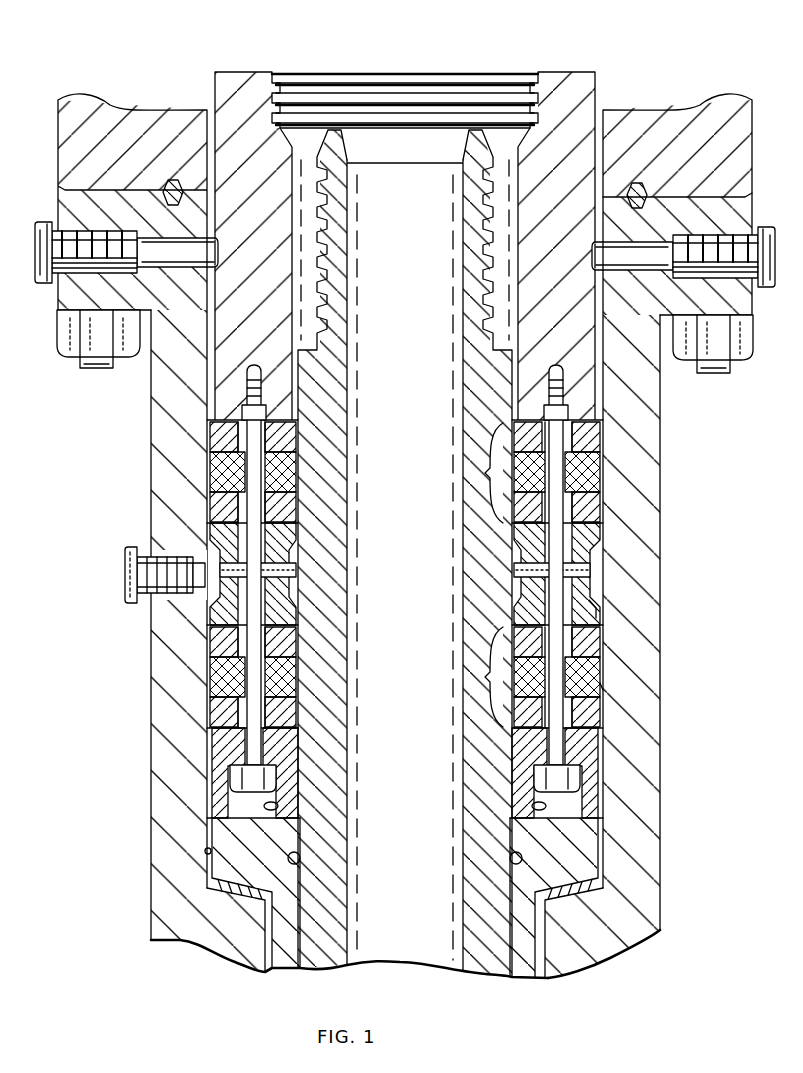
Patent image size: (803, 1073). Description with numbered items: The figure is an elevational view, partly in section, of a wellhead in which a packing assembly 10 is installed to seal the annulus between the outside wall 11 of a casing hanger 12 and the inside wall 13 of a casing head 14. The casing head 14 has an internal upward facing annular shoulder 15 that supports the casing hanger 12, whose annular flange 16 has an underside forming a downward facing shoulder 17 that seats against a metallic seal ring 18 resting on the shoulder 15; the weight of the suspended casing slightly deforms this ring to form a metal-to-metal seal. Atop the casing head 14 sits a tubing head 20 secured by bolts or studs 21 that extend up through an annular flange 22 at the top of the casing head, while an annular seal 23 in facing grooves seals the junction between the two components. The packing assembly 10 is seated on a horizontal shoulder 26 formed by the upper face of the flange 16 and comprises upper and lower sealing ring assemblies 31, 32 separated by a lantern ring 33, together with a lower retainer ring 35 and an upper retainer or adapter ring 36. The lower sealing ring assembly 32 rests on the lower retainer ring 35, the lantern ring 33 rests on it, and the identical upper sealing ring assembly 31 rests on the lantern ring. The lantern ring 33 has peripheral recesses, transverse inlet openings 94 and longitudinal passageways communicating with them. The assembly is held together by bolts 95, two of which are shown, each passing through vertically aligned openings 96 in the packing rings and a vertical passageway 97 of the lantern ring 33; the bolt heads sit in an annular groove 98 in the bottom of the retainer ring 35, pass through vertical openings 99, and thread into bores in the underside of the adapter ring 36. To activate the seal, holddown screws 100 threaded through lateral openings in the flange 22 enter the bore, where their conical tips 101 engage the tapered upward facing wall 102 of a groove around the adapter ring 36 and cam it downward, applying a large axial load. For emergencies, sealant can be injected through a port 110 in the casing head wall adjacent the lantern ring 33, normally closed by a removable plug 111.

The packing assembly 10 is at (561, 64).
The outside wall 11 is at (305, 868).
The casing hanger 12 is at (474, 400).
The inside wall 13 is at (206, 848).
The casing head 14 is at (646, 518).
The annular shoulder 15 is at (603, 880).
The annular flange 16 is at (240, 836).
The downward facing shoulder 17 is at (210, 890).
The metallic seal ring 18 is at (240, 893).
The tubing head 20 is at (627, 120).
The bolts or studs 21 is at (93, 367).
The annular flange 22 is at (733, 302).
The annular seal 23 is at (643, 182).
The horizontal shoulder 26 is at (578, 802).
The upper sealing ring assembly 31 is at (484, 473).
The lower sealing ring assembly 32 is at (484, 677).
The lantern ring 33 is at (220, 597).
The lower retainer ring 35 is at (223, 747).
The upper retainer or adapter ring 36 is at (210, 393).
The inlet openings 94 is at (288, 572).
The bolts 95 is at (259, 597).
The vertically aligned openings 96 is at (601, 683).
The vertical passageway 97 is at (596, 617).
The annular groove 98 is at (268, 808).
The vertical openings 99 is at (254, 756).
The holddown screws 100 is at (37, 222).
The conical tips 101 is at (221, 262).
The upward facing wall 102 is at (222, 246).
The port 110 is at (200, 566).
The removable plug 111 is at (123, 583).